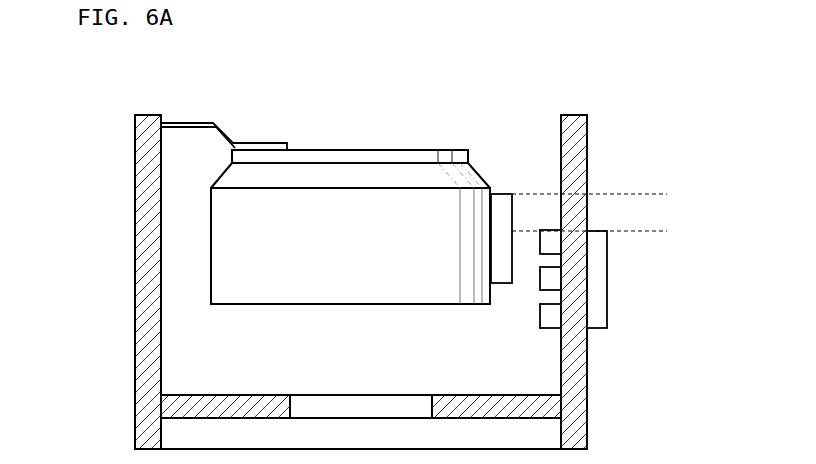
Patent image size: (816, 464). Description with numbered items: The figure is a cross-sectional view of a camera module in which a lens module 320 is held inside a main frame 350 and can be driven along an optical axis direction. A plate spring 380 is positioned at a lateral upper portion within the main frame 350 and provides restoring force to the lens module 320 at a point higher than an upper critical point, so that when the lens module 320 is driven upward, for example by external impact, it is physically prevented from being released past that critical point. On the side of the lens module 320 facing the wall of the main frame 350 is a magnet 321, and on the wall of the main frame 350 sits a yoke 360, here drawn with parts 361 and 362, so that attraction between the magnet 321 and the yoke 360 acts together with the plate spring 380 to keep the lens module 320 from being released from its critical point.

The lens module 320 is at (218, 270).
The magnet 321 is at (498, 215).
The main frame 350 is at (150, 322).
The yoke 360 is at (600, 240).
The terminal block 361 is at (553, 242).
The terminal block 362 is at (553, 278).
The plate spring 380 is at (262, 147).